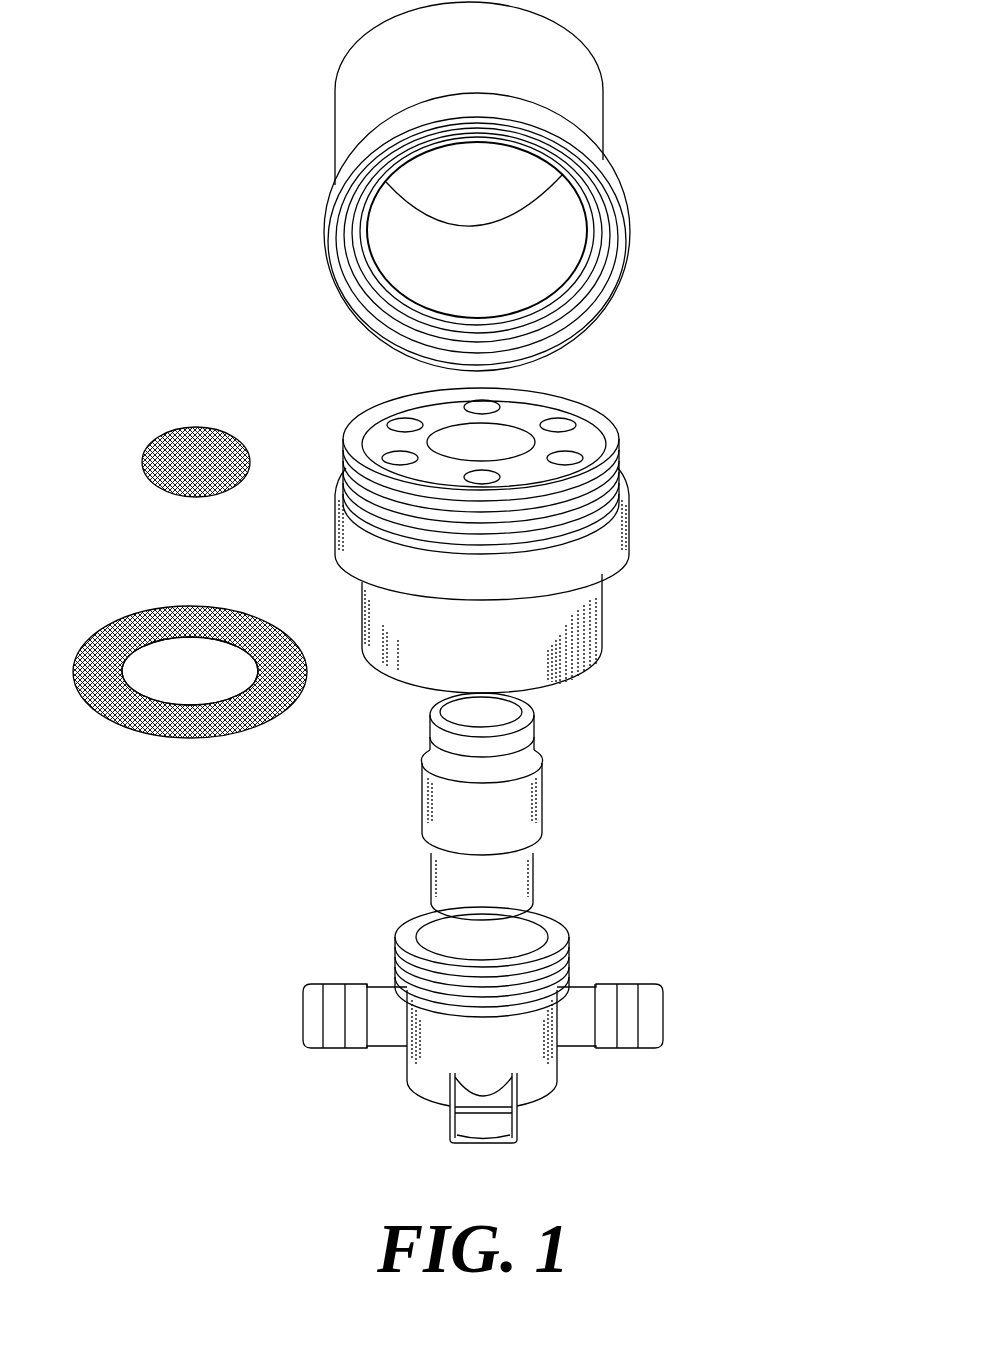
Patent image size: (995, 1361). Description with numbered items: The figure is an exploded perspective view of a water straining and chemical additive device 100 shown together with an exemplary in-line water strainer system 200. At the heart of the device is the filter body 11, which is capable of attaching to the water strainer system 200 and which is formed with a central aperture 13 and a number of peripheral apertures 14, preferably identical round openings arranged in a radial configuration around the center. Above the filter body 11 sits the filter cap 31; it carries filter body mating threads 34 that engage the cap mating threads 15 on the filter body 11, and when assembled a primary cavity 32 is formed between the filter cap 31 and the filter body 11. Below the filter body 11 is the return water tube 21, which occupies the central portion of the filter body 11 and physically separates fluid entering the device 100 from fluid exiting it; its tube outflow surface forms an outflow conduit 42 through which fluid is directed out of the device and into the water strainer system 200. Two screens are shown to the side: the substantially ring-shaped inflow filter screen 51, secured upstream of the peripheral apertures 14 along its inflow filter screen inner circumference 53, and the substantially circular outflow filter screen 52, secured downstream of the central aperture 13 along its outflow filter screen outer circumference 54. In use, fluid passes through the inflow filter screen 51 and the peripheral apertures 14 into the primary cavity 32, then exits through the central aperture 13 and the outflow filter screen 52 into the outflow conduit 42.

The water straining and chemical additive device 100 is at (223, 93).
The filter cap 31 is at (515, 186).
The primary cavity 32 is at (487, 250).
The filter body mating threads 34 is at (600, 300).
The filter body 11 is at (514, 522).
The central aperture 13 is at (500, 440).
The peripheral apertures 14 is at (392, 425).
The cap mating threads 15 is at (633, 486).
The outflow filter screen 52 is at (185, 441).
The outflow filter screen outer circumference 54 is at (143, 456).
The inflow filter screen 51 is at (190, 650).
The inflow filter screen inner circumference 53 is at (238, 700).
The outflow conduit 42 is at (497, 717).
The return water tube 21 is at (525, 804).
The in-line water strainer system 200 is at (590, 1084).